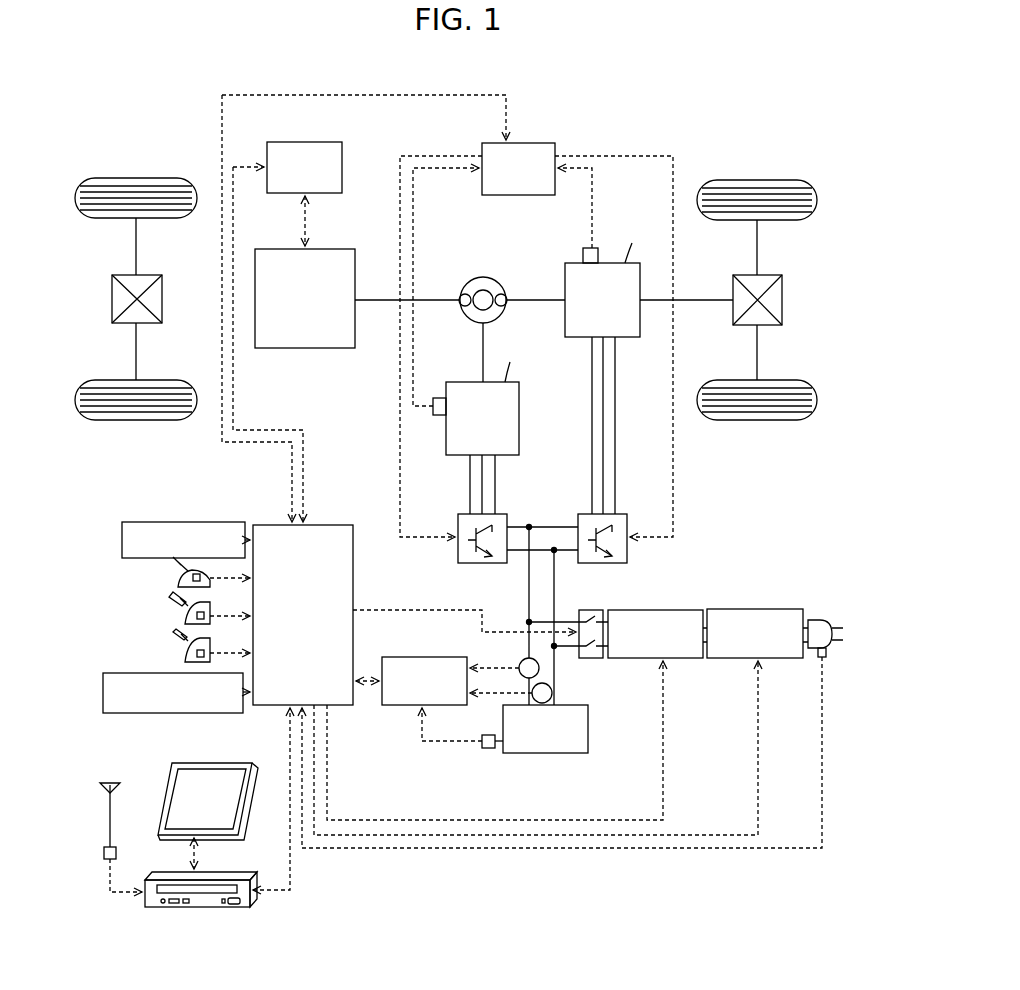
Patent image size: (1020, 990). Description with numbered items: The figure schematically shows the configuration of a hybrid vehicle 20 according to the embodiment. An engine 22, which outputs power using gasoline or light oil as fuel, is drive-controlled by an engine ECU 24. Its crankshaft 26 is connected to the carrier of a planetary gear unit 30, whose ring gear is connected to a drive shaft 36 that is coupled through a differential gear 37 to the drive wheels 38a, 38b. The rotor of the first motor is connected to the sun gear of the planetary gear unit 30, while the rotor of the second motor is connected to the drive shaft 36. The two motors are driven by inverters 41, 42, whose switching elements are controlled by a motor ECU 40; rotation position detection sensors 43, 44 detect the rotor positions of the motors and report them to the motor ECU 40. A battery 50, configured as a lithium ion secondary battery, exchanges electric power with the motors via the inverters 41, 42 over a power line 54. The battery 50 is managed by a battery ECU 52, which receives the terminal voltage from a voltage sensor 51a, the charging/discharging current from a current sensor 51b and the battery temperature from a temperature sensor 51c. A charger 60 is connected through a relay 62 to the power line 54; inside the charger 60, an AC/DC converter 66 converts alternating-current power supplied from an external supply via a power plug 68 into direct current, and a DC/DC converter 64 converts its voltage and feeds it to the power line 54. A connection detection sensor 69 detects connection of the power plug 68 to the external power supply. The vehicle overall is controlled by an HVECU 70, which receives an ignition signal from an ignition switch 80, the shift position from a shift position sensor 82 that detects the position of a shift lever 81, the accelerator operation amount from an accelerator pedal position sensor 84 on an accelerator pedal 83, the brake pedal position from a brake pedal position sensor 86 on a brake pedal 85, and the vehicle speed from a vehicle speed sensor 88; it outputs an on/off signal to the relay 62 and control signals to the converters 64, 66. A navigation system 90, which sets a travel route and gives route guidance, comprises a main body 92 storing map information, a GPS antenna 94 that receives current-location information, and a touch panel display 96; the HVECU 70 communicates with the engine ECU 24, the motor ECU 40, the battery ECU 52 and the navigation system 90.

The hybrid vehicle 20 is at (640, 106).
The engine 22 is at (322, 249).
The engine ECU 24 is at (303, 142).
The crankshaft 26 is at (441, 298).
The planetary gear unit 30 is at (482, 277).
The drive shaft 36 is at (702, 298).
The differential gear 37 is at (768, 275).
The drive wheel 38a is at (758, 180).
The drive wheel 38b is at (758, 422).
The motor ECU 40 is at (528, 143).
The inverter 41 is at (500, 514).
The inverter 42 is at (620, 514).
The rotation position detection sensor 43 is at (440, 398).
The rotation position detection sensor 44 is at (595, 248).
The battery 50 is at (588, 731).
The voltage sensor 51a is at (552, 693).
The current sensor 51b is at (539, 668).
The temperature sensor 51c is at (490, 748).
The battery ECU 52 is at (423, 657).
The power line 54 is at (529, 594).
The charger 60 is at (724, 572).
The relay 62 is at (590, 610).
The DC/DC converter 64 is at (660, 610).
The AC/DC converter 66 is at (769, 609).
The power plug 68 is at (820, 620).
The connection detection sensor 69 is at (817, 659).
The HVECU 70 is at (328, 525).
The ignition switch 80 is at (122, 538).
The shift lever 81 is at (175, 567).
The shift position sensor 82 is at (180, 581).
The accelerator pedal 83 is at (172, 601).
The accelerator pedal position sensor 84 is at (186, 617).
The brake pedal 85 is at (180, 646).
The brake pedal position sensor 86 is at (186, 659).
The vehicle speed sensor 88 is at (103, 692).
The navigation system 90 is at (158, 757).
The main body 92 is at (200, 907).
The GPS antenna 94 is at (116, 853).
The touch panel display 96 is at (205, 763).